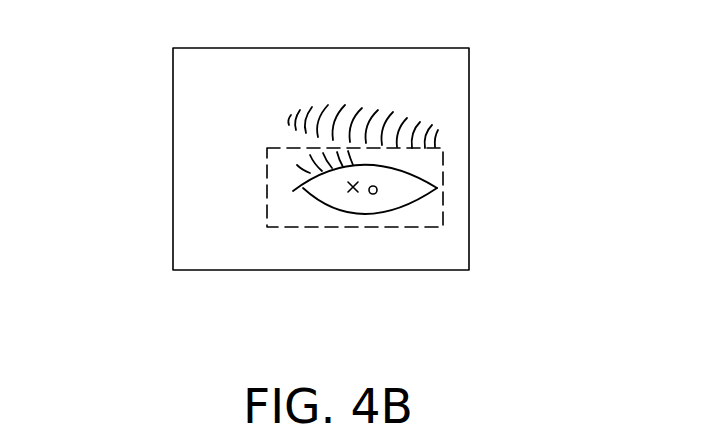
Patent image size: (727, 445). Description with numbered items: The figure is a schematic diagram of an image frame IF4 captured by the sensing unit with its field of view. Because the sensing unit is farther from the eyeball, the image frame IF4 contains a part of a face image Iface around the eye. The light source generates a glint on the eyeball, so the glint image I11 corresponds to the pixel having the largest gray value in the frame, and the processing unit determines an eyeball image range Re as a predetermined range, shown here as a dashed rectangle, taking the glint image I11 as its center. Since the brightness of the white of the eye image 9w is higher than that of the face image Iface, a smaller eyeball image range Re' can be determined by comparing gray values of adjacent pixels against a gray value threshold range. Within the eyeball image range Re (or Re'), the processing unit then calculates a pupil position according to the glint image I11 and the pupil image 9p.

The image frame IF4 is at (173, 96).
The face image Iface is at (443, 87).
The eyeball image range Re is at (410, 187).
The eyeball image range Re' is at (383, 236).
The glint image I11 is at (353, 194).
The pupil image 9p is at (373, 195).
The white of the eye image 9w is at (397, 203).